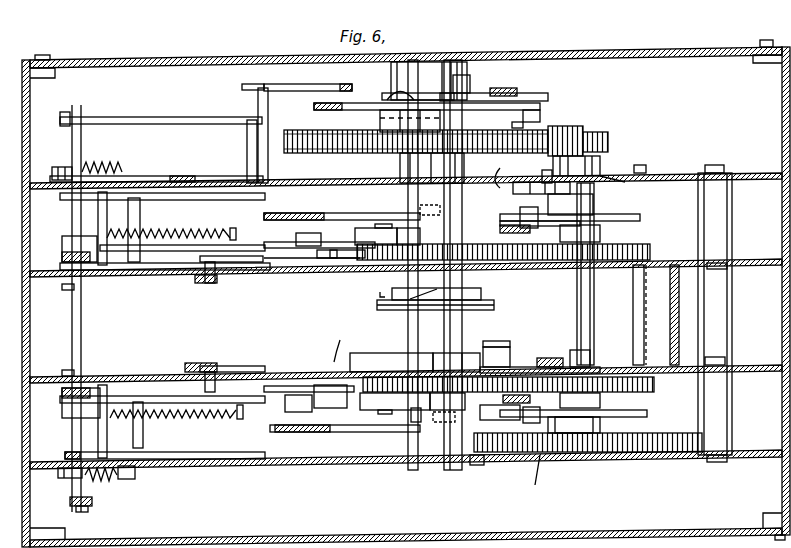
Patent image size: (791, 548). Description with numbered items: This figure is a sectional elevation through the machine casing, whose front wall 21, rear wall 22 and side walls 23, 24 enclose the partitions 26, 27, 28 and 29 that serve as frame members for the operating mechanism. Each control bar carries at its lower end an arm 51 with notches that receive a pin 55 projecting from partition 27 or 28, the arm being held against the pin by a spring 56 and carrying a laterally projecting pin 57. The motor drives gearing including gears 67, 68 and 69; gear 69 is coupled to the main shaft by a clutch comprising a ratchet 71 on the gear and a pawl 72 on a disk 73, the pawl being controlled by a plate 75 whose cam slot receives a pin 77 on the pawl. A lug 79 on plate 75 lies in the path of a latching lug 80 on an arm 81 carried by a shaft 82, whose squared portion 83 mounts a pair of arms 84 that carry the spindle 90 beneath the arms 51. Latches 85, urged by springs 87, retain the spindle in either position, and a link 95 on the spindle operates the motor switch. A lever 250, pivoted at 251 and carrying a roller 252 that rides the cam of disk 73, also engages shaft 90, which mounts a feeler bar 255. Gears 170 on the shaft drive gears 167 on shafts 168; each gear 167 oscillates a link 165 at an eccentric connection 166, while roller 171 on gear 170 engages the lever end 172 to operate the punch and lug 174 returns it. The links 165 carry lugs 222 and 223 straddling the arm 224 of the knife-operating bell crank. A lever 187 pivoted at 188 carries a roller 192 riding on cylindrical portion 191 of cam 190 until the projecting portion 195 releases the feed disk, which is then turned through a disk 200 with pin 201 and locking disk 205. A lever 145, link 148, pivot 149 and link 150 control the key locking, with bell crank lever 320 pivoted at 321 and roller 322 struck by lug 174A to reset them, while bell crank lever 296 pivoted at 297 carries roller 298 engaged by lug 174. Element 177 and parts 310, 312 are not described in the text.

The front wall 21 is at (30, 462).
The rear wall 22 is at (782, 477).
The side wall 23 is at (739, 48).
The side wall 24 is at (716, 535).
The partition 26 is at (682, 173).
The partition 27 is at (690, 259).
The partition 28 is at (700, 364).
The partition 29 is at (672, 463).
The arm 51 is at (60, 265).
The pin 55 is at (99, 270).
The spring 56 is at (175, 200).
The pin 57 is at (68, 237).
The gear 67 is at (640, 456).
The gear 68 is at (609, 137).
The gear 69 is at (558, 127).
The ratchet 71 is at (382, 140).
The pawl 72 is at (475, 140).
The disk 73 is at (545, 101).
The plate 75 is at (518, 95).
The pin 77 is at (424, 81).
The lug 79 is at (470, 82).
The latching lug 80 is at (343, 86).
The arm 81 is at (293, 90).
The shaft 82 is at (258, 98).
The squared portion 83 is at (262, 209).
The arm 84 is at (204, 200).
The latch 85 is at (60, 167).
The spring 87 is at (96, 163).
The spindle 90 is at (74, 306).
The link 95 is at (92, 506).
The lever 145 is at (194, 282).
The link 148 is at (235, 282).
The pivot 149 is at (318, 240).
The link 150 is at (283, 240).
The link 165 is at (520, 215).
The eccentric connection 166 is at (600, 233).
The gear 167 is at (654, 240).
The shaft 168 is at (548, 268).
The gear 170 is at (356, 436).
The roller 171 is at (441, 213).
The lower end of lever 172 is at (406, 212).
The lug 174 is at (412, 402).
The lug 174A is at (387, 234).
The column 177 is at (680, 310).
The lever 187 is at (546, 358).
The pivot 188 is at (580, 351).
The cam 190 is at (480, 352).
The cylindrical portion 191 is at (449, 356).
The roller 192 is at (506, 352).
The projecting portion 195 is at (378, 355).
The disk 200 is at (494, 305).
The pin 201 is at (408, 303).
The disk 205 is at (370, 285).
The lug 222 is at (511, 325).
The lug 223 is at (553, 476).
The arm 224 is at (600, 215).
The lever 250 is at (172, 117).
The pivot 251 is at (248, 130).
The roller 252 is at (394, 100).
The feeler bar 255 is at (151, 176).
The bell crank lever 296 is at (338, 340).
The pivot 297 is at (352, 398).
The roller 298 is at (503, 398).
The arm 310 is at (610, 178).
The pin 312 is at (546, 171).
The bell crank lever 320 is at (338, 265).
The pivot 321 is at (332, 248).
The roller 322 is at (500, 235).